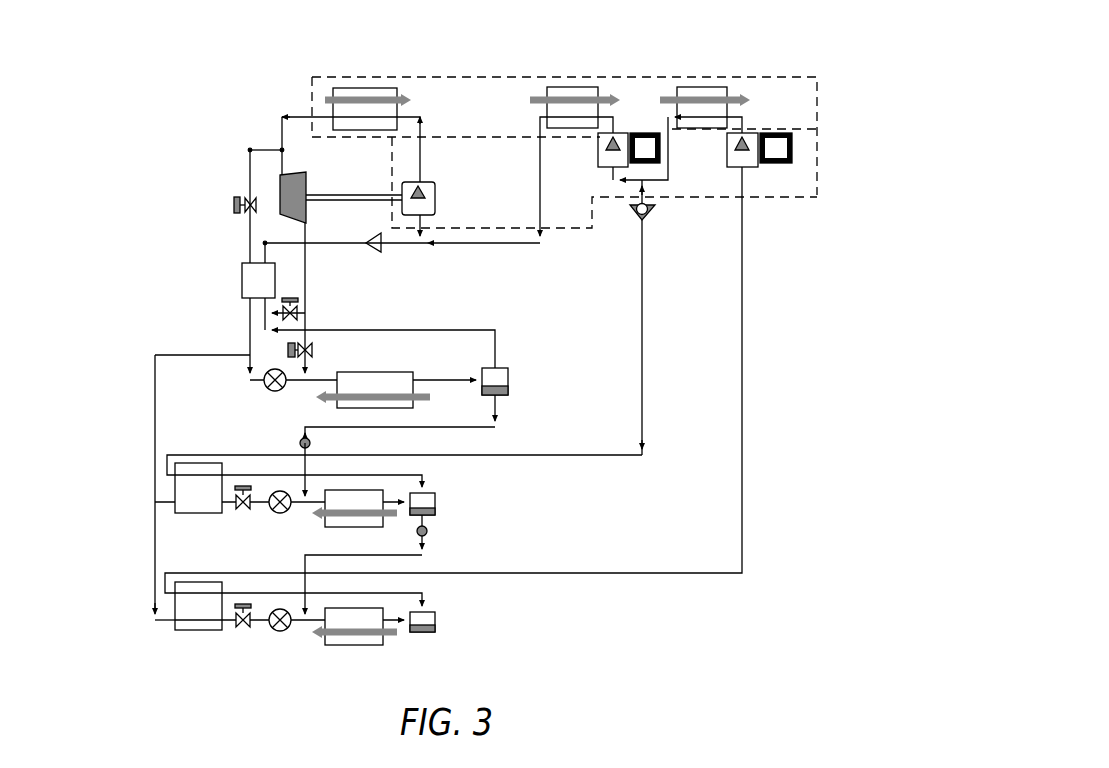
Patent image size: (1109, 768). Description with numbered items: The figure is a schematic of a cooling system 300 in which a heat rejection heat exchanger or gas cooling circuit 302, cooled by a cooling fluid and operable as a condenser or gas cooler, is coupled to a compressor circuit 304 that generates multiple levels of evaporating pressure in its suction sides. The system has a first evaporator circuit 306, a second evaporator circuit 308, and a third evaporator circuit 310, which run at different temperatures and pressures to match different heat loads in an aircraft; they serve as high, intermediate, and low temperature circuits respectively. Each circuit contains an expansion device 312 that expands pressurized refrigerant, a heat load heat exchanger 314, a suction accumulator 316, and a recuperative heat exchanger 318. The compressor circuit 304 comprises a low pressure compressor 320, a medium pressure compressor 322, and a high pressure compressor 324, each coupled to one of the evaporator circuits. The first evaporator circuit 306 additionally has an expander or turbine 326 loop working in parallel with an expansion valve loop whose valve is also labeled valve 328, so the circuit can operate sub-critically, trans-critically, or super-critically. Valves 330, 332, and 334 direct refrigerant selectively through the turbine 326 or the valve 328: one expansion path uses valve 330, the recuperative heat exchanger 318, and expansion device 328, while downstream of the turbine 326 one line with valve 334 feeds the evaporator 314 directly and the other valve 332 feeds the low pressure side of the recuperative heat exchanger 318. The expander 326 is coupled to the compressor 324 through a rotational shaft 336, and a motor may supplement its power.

The cooling system 300 is at (838, 65).
The gas cooling circuit 302 is at (508, 68).
The compressor circuit 304 is at (594, 222).
The first evaporator circuit 306 is at (118, 264).
The second evaporator circuit 308 is at (113, 466).
The third evaporator circuit 310 is at (123, 595).
The expansion device 312 is at (270, 392).
The heat load heat exchanger 314 is at (398, 371).
The suction accumulator 316 is at (508, 372).
The recuperative heat exchanger 318 is at (242, 276).
The low pressure compressor 320 is at (758, 168).
The medium pressure compressor 322 is at (598, 156).
The high pressure compressor 324 is at (437, 197).
The turbine 326 is at (295, 172).
The expansion valve 328 is at (268, 369).
The valve 330 is at (236, 201).
The valve 332 is at (290, 300).
The valve 334 is at (310, 340).
The rotational shaft 336 is at (356, 194).